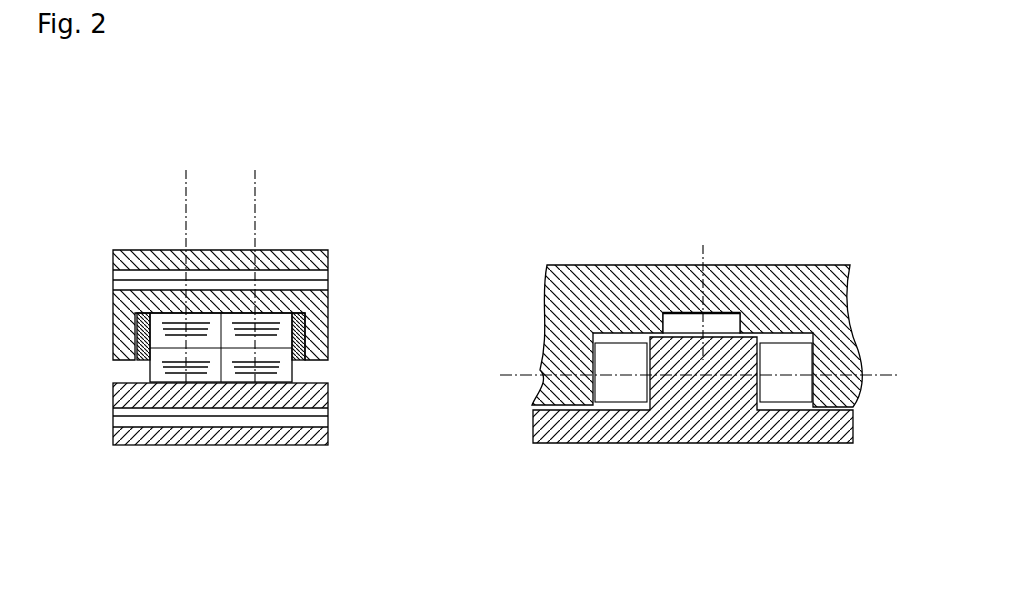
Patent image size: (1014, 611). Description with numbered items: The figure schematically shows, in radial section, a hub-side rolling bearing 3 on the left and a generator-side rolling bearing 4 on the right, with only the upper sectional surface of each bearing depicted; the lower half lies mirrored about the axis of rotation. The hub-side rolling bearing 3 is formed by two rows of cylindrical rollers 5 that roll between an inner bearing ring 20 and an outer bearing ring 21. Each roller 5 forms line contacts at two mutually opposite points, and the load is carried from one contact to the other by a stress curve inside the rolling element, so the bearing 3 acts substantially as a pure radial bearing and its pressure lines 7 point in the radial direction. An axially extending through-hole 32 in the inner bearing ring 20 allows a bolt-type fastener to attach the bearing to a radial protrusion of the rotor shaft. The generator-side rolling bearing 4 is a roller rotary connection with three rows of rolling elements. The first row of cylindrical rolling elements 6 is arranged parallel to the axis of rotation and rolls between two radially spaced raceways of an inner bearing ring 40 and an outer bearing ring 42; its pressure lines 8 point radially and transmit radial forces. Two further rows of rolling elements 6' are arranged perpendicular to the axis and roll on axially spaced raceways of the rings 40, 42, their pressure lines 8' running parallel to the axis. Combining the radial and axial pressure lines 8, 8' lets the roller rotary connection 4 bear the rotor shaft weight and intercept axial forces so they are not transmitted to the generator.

The hub-side rolling bearing 3 is at (205, 488).
The generator-side rolling bearing 4 is at (686, 487).
The cylindrical rollers 5 is at (263, 355).
The cylindrical rolling elements 6 is at (722, 271).
The cylindrical rolling elements 6' is at (707, 397).
The pressure lines 7 is at (255, 187).
The pressure lines 8 is at (673, 282).
The pressure lines 8' is at (701, 351).
The inner bearing ring 20 is at (127, 438).
The outer bearing ring 21 is at (118, 310).
The axially extending through-hole 32 is at (116, 421).
The inner bearing ring 40 is at (748, 433).
The outer bearing ring 42 is at (827, 317).